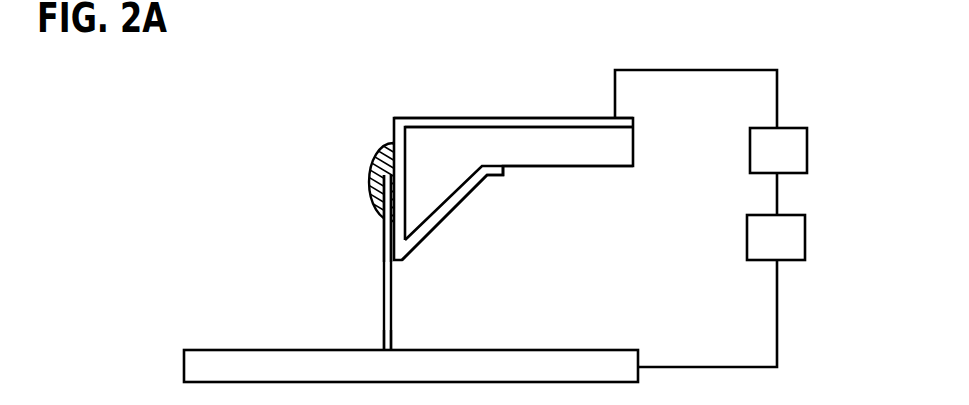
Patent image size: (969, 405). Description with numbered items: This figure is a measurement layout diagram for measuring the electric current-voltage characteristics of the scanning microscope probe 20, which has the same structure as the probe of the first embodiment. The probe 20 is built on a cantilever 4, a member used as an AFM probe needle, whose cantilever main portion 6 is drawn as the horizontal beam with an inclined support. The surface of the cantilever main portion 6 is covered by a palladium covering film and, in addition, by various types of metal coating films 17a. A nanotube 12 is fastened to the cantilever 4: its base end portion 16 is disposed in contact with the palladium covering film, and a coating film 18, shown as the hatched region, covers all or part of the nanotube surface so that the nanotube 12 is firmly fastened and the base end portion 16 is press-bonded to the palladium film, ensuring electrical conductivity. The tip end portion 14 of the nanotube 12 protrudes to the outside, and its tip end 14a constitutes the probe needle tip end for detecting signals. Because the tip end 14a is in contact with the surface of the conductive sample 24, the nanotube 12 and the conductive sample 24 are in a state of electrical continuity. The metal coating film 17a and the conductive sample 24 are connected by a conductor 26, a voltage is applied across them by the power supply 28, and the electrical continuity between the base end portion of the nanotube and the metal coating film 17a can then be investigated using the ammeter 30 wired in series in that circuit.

The probe 20 is at (452, 90).
The cantilever 4 is at (388, 120).
The cantilever main portion 6 is at (498, 146).
The metal coating film 17a is at (458, 195).
The coating film 18 is at (372, 176).
The base end portion 16 is at (383, 228).
The tip end portion 14 is at (382, 310).
The tip end 14a is at (378, 350).
The nanotube 12 is at (457, 308).
The conductive sample 24 is at (231, 363).
The conductor 26 is at (690, 366).
The power supply 28 is at (756, 152).
The ammeter 30 is at (755, 242).